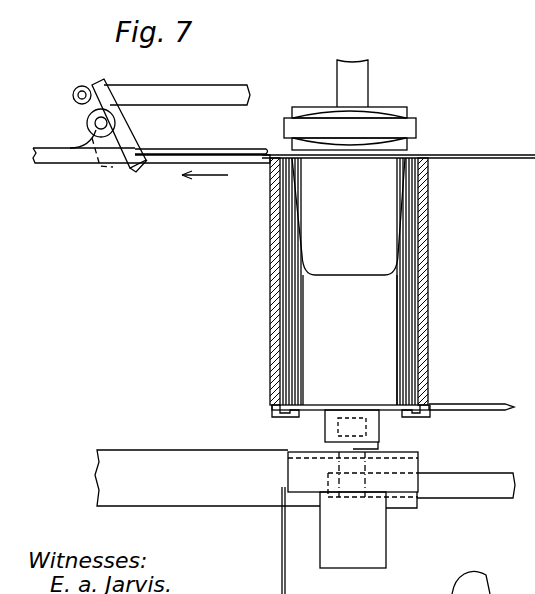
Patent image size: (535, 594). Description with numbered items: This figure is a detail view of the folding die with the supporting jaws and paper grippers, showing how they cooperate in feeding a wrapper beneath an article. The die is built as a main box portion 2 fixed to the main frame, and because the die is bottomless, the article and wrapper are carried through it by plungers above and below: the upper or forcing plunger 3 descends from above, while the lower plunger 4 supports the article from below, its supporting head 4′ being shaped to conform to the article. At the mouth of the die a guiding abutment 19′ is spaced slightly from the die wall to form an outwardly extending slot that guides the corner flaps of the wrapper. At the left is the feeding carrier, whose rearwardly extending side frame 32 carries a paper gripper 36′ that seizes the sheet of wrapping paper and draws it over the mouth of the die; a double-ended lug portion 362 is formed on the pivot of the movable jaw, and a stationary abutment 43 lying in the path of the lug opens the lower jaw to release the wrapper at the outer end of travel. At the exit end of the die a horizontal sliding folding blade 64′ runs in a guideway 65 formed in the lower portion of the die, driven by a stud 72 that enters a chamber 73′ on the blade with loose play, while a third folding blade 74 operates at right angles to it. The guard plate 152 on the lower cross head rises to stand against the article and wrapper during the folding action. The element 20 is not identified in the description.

The main box portion 2 is at (361, 281).
The upper or forcing plunger 3 is at (330, 105).
The lower plunger 4 is at (370, 535).
The supporting head 4′ is at (405, 462).
The guard plate 152 is at (282, 545).
The guiding abutment 19′ is at (348, 281).
The table bar 20 is at (305, 479).
The side frame 32 is at (207, 150).
The paper gripper 36′ is at (86, 142).
The double-ended lug portion 362 is at (99, 85).
The stationary abutment 43 is at (73, 95).
The horizontal sliding folding blade 64′ is at (342, 405).
The guideway 65 is at (285, 412).
The stud 72 is at (366, 449).
The chamber 73′ is at (326, 424).
The third folding blade 74 is at (472, 404).